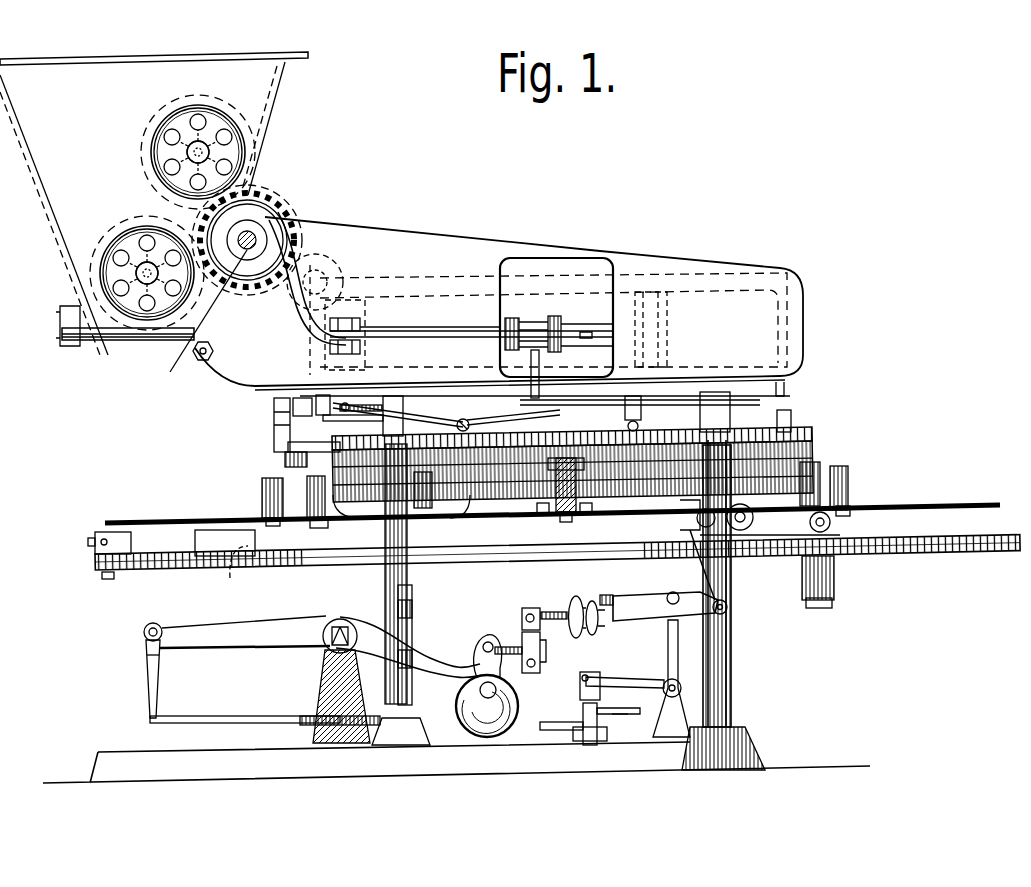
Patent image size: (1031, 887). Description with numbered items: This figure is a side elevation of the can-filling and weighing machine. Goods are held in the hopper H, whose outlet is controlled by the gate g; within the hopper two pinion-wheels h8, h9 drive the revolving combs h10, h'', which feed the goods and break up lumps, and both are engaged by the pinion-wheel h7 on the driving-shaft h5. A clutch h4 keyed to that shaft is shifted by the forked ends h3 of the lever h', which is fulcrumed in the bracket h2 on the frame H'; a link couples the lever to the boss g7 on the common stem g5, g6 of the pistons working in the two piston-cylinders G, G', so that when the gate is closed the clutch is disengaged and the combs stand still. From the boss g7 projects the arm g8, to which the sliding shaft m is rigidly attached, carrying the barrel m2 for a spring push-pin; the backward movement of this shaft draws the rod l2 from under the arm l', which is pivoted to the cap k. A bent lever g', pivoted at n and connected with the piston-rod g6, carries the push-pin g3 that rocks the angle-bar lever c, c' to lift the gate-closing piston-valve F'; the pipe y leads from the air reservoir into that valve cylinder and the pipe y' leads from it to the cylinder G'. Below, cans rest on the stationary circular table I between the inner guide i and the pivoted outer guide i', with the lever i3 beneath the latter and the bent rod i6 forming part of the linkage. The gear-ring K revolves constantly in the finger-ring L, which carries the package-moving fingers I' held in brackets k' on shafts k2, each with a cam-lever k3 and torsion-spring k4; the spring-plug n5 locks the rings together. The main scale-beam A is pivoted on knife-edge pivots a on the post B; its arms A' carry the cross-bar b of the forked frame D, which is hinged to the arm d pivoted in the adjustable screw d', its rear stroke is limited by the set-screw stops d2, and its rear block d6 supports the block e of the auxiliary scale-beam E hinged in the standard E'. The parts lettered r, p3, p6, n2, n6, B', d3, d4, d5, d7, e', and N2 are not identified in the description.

The hopper H is at (154, 203).
The pinion-wheel h8 is at (242, 118).
The revolving comb h10 is at (213, 150).
The pinion-wheel h7 is at (247, 194).
The clutch h4 is at (250, 238).
The forked ends h3 is at (262, 228).
The driving-shaft h5 is at (290, 226).
The bracket h2 is at (342, 320).
The pinion-wheel h9 is at (102, 243).
The revolving comb h'' is at (92, 276).
The gate g is at (125, 346).
The piston-cylinder G is at (499, 301).
The piston-cylinder G' is at (748, 323).
The pipe y' is at (681, 586).
The lever h' is at (471, 273).
The piston stem g5 is at (423, 323).
The frame H' is at (556, 297).
The boss g7 is at (514, 320).
The piston stem g6 is at (584, 318).
The arm g8 is at (540, 352).
The gear-ring K is at (806, 436).
The finger-ring L is at (790, 466).
The rod l2 is at (278, 405).
The arm l' is at (301, 432).
The lever i3 is at (288, 428).
The cap k is at (290, 480).
The cam-lever k3 is at (262, 486).
The bracket k' is at (560, 506).
The shaft m is at (446, 413).
The barrel m2 is at (463, 418).
The rod r is at (606, 403).
The post p3 is at (795, 421).
The hooked fingers I' is at (535, 506).
The stationary circular table I is at (557, 566).
The roller p6 is at (840, 527).
The bracket n2 is at (838, 540).
The cylinder n6 is at (838, 578).
The spring-plug n5 is at (838, 601).
The torsion-spring k4 is at (590, 508).
The shaft k2 is at (566, 516).
The pivot n is at (690, 522).
The bent lever g' is at (684, 563).
The outer guide i' is at (85, 534).
The inner guide i is at (208, 534).
The bent rod i6 is at (125, 578).
The cross-bar b is at (144, 633).
The arms A' is at (245, 621).
The forked frame D is at (146, 682).
The arm d is at (223, 729).
The knife-edge pivots a is at (330, 626).
The post B is at (326, 696).
The base B' is at (456, 762).
The main scale-beam A is at (408, 647).
The adjustable set-screw stops d2 is at (412, 662).
The column d3 is at (402, 745).
The adjustable screw d' is at (337, 763).
The cam d4 is at (483, 737).
The cam pin d5 is at (480, 689).
The rack rod d7 is at (506, 646).
The block d6 is at (545, 646).
The block e is at (531, 602).
The pulley e' is at (577, 602).
The auxiliary scale-beam E is at (689, 613).
The push-pin g3 is at (680, 597).
The standard E' is at (729, 607).
The standard N2 is at (733, 697).
The angle-bar lever c is at (675, 678).
The horizontal arm c' is at (622, 676).
The piston-valve F' is at (573, 715).
The pipe y is at (615, 763).